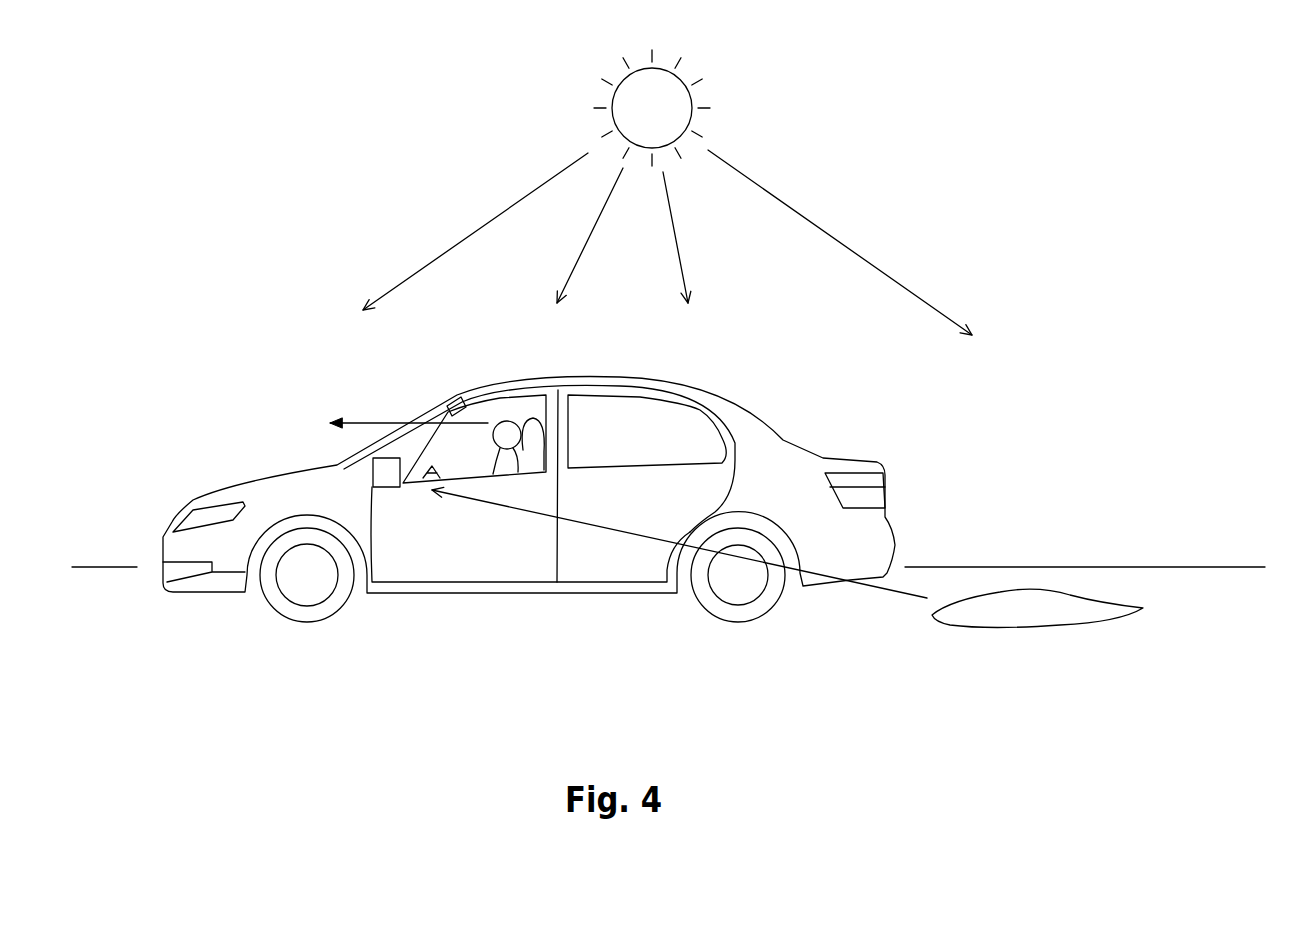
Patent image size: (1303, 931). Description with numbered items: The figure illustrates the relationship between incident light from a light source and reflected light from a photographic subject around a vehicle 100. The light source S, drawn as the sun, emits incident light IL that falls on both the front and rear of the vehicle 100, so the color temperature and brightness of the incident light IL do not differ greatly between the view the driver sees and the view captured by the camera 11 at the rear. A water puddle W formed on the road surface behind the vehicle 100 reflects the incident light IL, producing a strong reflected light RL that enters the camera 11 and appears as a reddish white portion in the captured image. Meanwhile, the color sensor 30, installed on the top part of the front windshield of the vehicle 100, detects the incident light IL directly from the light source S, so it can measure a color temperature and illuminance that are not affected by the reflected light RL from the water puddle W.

The light source S is at (692, 96).
The incident light IL is at (818, 227).
The vehicle 100 is at (529, 482).
The color sensor 30 is at (458, 394).
The camera 11 is at (368, 470).
The reflected light RL is at (880, 593).
The water puddle W is at (1087, 607).